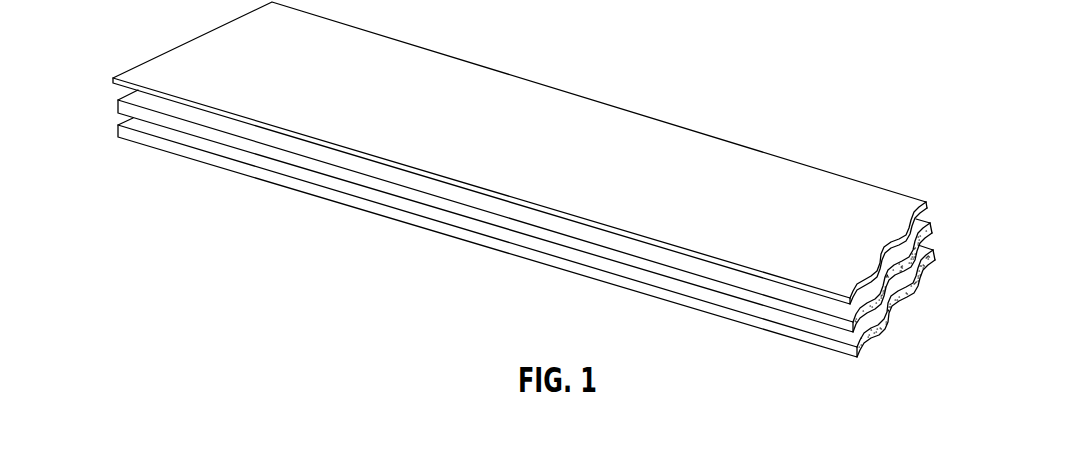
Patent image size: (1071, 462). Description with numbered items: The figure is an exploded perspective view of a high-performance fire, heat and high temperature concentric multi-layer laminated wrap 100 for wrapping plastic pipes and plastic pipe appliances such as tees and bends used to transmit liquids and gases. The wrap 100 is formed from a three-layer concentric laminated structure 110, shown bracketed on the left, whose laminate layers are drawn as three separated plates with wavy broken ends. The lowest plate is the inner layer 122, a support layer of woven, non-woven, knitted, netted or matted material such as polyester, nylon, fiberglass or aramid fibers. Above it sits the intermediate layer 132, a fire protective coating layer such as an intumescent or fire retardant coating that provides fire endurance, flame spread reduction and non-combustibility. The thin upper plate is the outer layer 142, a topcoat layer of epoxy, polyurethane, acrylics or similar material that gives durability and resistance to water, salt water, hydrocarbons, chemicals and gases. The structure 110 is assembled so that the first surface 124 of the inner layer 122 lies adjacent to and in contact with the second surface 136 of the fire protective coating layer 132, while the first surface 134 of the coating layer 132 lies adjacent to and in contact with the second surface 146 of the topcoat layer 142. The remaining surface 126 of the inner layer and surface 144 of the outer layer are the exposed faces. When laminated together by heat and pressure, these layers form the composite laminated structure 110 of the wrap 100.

The concentric multi-layer laminated wrap 100 is at (802, 60).
The laminated structure 110 is at (100, 58).
The inner layer 122 is at (790, 335).
The first surface of the inner layer 124 is at (870, 342).
The second surface of bottom layer 126 is at (822, 352).
The intermediate layer 132 is at (560, 237).
The first surface of the fire protective coating layer 134 is at (503, 208).
The second surface of the fire protective coating layer 136 is at (405, 202).
The outer layer 142 is at (348, 150).
The top surface of top layer 144 is at (313, 128).
The second surface of the protective topcoat layer 146 is at (220, 113).